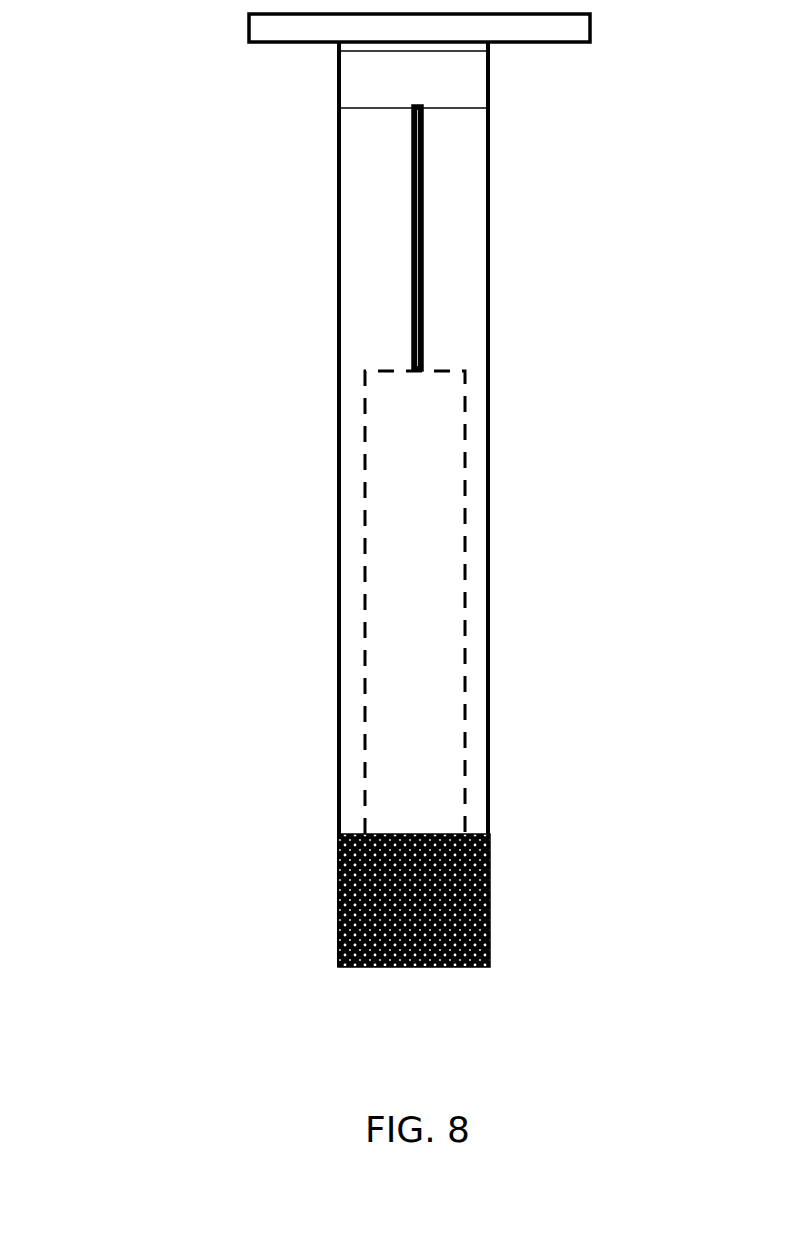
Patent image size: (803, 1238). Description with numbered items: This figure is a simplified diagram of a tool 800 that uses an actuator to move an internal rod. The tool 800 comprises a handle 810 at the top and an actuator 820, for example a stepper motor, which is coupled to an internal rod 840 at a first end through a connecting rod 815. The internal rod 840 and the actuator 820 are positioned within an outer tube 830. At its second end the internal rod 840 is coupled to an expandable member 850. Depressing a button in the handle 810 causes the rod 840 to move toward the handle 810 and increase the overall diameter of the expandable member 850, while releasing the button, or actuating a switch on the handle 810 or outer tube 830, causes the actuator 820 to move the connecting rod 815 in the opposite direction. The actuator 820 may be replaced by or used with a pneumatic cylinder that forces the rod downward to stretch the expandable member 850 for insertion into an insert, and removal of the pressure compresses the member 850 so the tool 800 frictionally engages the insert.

The tool 800 is at (238, 429).
The handle 810 is at (591, 27).
The connecting rod 815 is at (423, 232).
The actuator 820 is at (352, 80).
The outer tube 830 is at (490, 441).
The internal rod 840 is at (440, 565).
The expandable member 850 is at (490, 891).